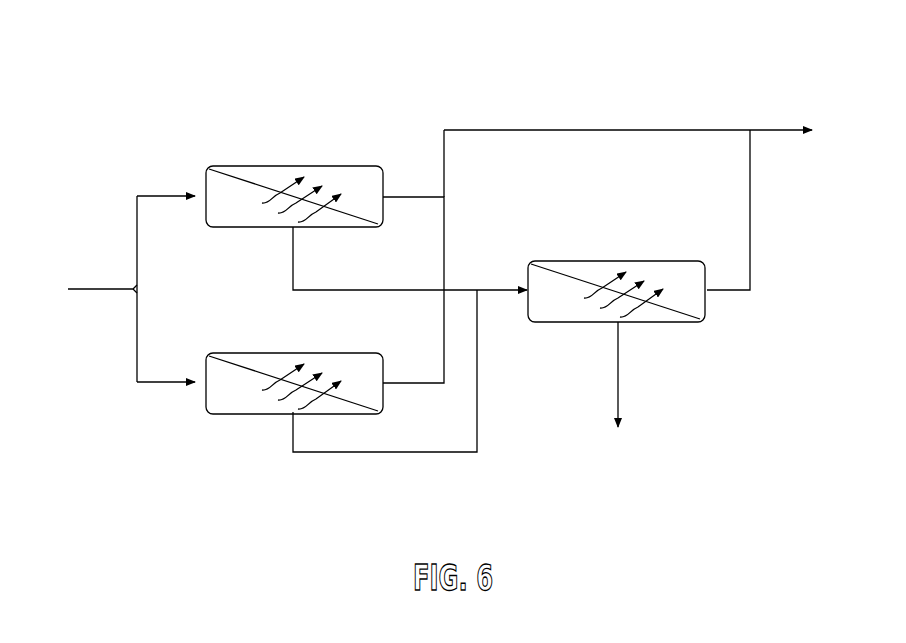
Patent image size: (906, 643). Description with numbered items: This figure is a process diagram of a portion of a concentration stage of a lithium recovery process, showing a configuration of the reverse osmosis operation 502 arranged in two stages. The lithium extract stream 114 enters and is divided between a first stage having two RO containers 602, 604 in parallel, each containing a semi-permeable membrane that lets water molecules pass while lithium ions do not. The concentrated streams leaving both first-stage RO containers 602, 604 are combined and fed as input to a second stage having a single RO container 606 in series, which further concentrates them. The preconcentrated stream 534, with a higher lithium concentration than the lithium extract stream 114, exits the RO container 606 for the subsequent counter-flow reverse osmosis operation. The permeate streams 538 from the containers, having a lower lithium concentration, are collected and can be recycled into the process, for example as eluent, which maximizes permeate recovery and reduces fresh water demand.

The reverse osmosis operation 502 is at (162, 45).
The lithium extract stream 114 is at (92, 289).
The RO container 602 is at (327, 160).
The RO container 604 is at (270, 419).
The RO container 606 is at (662, 255).
The permeate stream 538 is at (865, 142).
The preconcentrated stream 534 is at (638, 462).